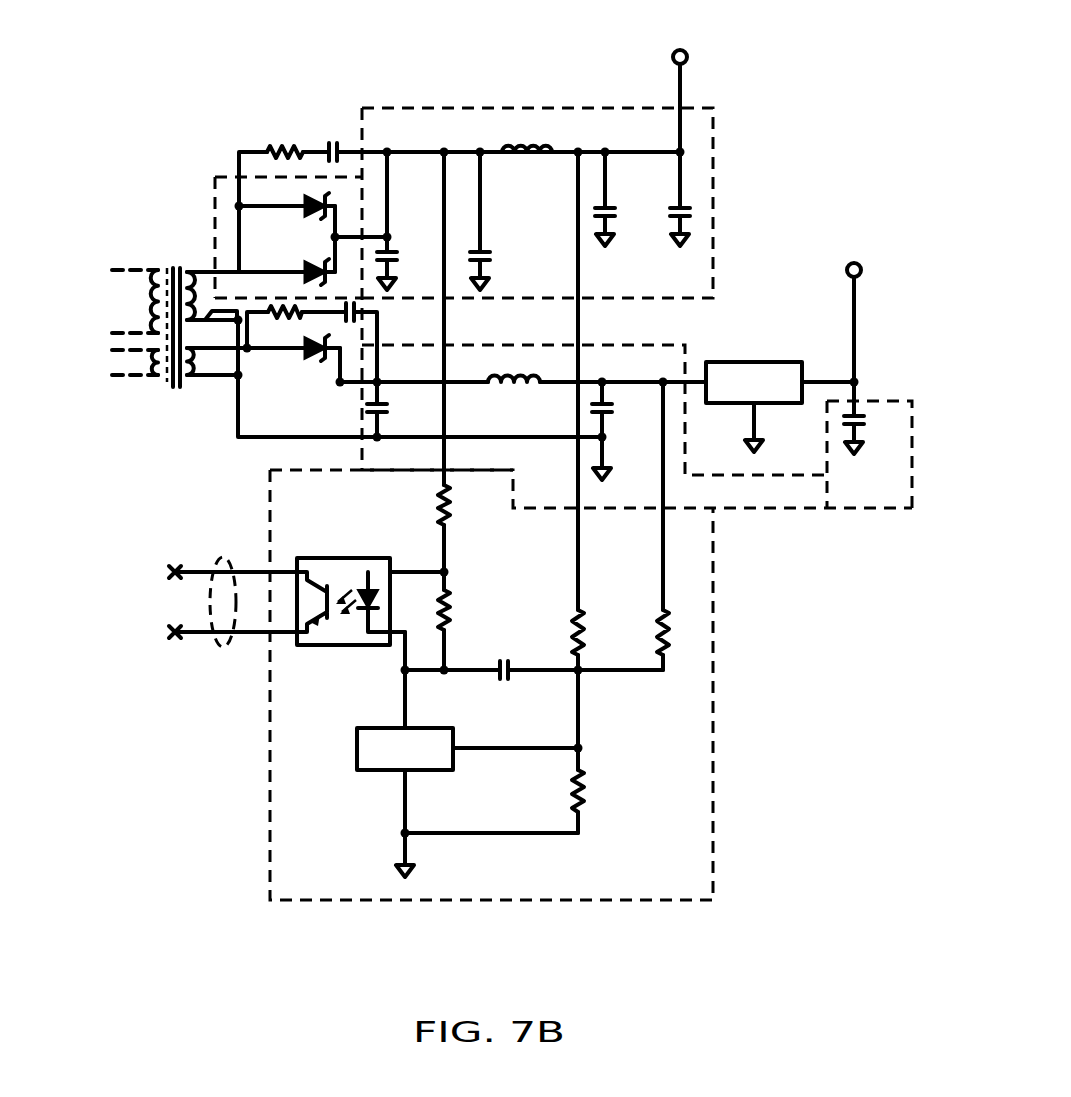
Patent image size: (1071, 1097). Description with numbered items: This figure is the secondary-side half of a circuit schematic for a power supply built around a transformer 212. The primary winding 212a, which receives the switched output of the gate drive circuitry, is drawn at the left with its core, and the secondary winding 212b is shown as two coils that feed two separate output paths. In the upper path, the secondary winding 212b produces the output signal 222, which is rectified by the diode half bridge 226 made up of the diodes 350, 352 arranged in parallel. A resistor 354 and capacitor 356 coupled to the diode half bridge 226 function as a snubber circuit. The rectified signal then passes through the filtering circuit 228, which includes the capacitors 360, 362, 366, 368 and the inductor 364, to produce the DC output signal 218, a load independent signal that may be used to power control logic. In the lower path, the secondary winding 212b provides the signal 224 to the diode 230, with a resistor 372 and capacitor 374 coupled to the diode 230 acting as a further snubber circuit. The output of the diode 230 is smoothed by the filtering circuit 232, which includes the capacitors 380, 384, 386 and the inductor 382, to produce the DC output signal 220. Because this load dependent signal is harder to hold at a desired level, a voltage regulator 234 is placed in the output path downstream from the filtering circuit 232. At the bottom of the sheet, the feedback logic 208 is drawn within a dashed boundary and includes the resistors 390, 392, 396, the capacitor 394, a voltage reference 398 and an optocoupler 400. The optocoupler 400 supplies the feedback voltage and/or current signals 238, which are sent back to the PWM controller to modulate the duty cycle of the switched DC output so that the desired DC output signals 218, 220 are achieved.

The feedback logic 208 is at (270, 772).
The transformer 212 is at (118, 330).
The primary winding 212a is at (148, 262).
The secondary winding 212b is at (192, 396).
The DC output signal 218 is at (691, 44).
The DC output signal 220 is at (864, 259).
The output signal 222 is at (234, 283).
The signal 224 is at (207, 365).
The diode half bridge 226 is at (256, 206).
The filtering circuit 228 is at (537, 263).
The diode 230 is at (325, 356).
The filtering circuit 232 is at (620, 345).
The voltage regulator 234 is at (755, 362).
The feedback voltage and/or current signals 238 is at (218, 561).
The diode 350 is at (309, 203).
The diode 352 is at (318, 264).
The resistor 354 is at (284, 150).
The capacitor 356 is at (333, 145).
The capacitor 360 is at (393, 258).
The capacitor 362 is at (487, 258).
The inductor 364 is at (518, 150).
The capacitor 366 is at (613, 220).
The capacitor 368 is at (672, 232).
The resistor 372 is at (288, 322).
The capacitor 374 is at (366, 313).
The capacitor 380 is at (372, 416).
The inductor 382 is at (524, 384).
The capacitor 384 is at (611, 412).
The capacitor 386 is at (863, 425).
The resistor 390 is at (446, 522).
The resistor 392 is at (449, 614).
The capacitor 394 is at (509, 677).
The resistor 396 is at (583, 775).
The voltage reference 398 is at (359, 734).
The optocoupler 400 is at (346, 558).